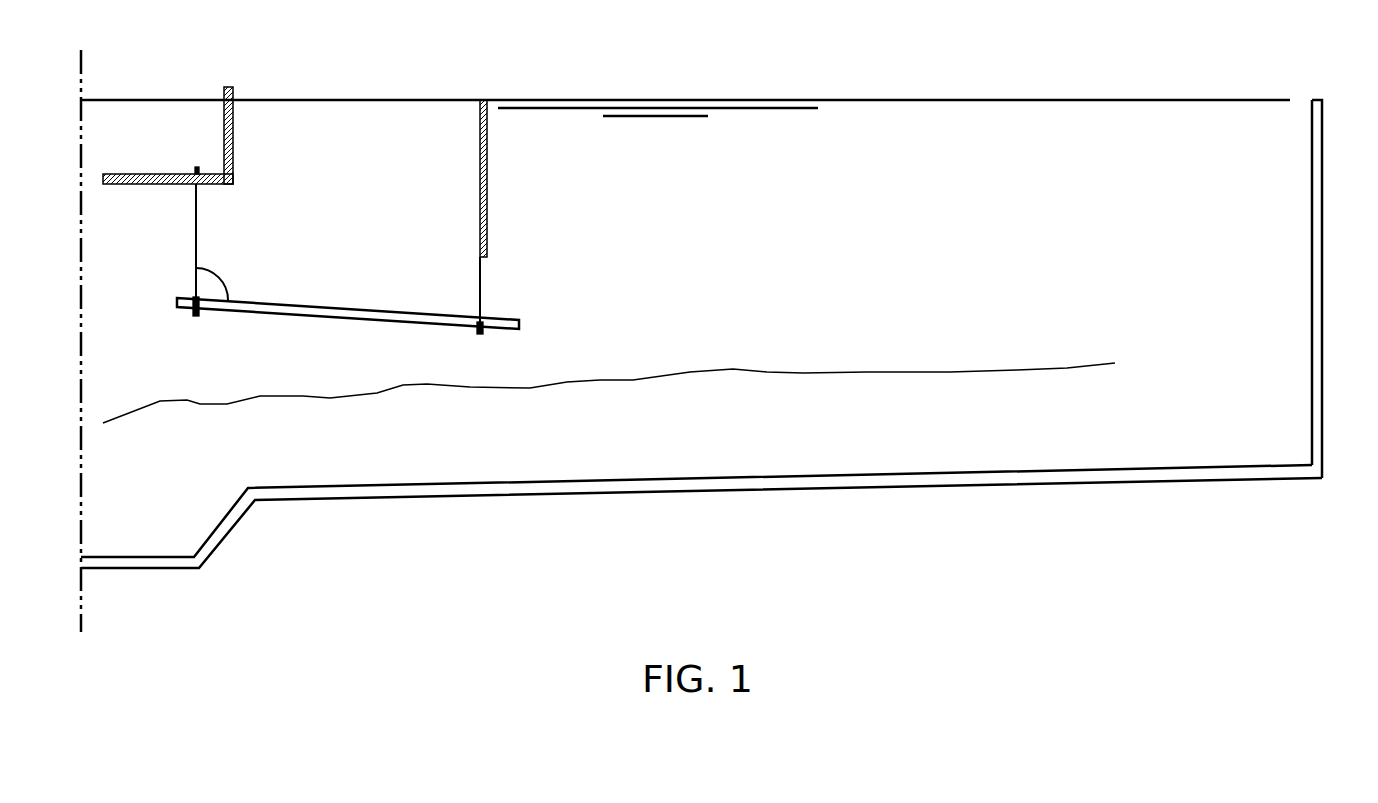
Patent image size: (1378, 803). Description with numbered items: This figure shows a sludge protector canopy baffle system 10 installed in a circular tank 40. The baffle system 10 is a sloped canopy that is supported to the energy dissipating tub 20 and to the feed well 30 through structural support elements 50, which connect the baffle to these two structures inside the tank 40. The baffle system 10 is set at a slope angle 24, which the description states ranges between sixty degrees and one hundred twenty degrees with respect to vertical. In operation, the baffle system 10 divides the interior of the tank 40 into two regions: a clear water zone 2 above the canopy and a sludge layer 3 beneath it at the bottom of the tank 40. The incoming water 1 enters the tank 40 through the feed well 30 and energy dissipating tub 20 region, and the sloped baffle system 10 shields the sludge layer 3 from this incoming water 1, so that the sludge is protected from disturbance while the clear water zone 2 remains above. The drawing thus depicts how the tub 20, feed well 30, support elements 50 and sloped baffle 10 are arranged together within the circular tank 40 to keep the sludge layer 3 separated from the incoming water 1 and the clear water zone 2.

The incoming water 1 is at (312, 210).
The clear water zone 2 is at (609, 265).
The sludge layer 3 is at (701, 504).
The sludge protector canopy baffle system 10 is at (438, 307).
The energy dissipating tub 20 is at (168, 135).
The slope angle 24 is at (221, 203).
The feed well 30 is at (500, 178).
The circular tank 40 is at (1338, 289).
The structural support elements 50 is at (499, 295).